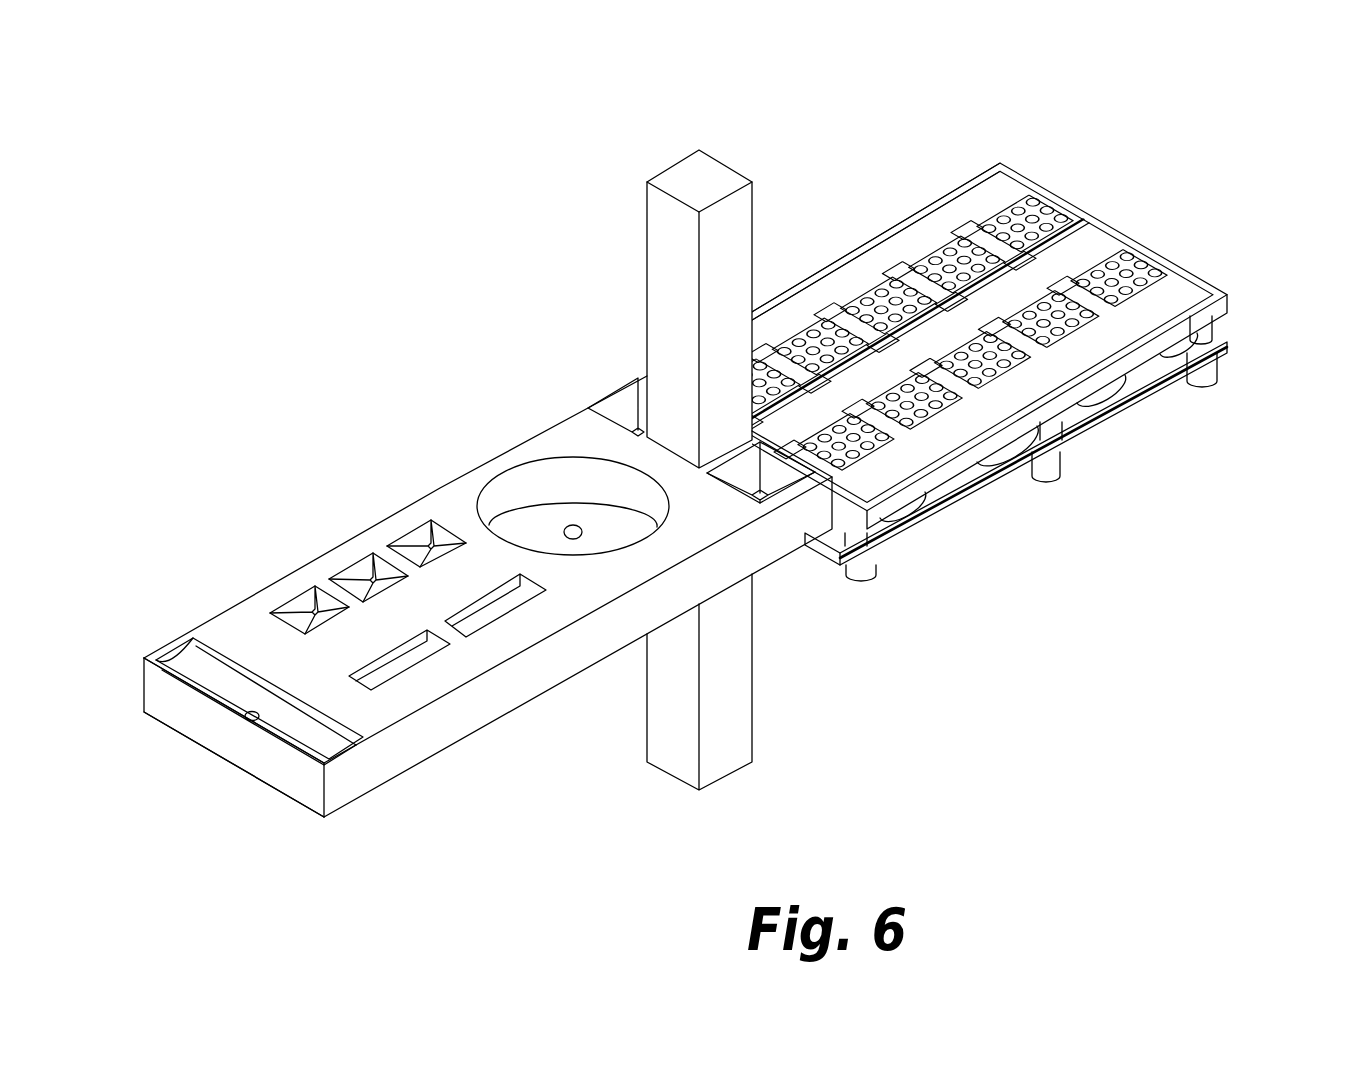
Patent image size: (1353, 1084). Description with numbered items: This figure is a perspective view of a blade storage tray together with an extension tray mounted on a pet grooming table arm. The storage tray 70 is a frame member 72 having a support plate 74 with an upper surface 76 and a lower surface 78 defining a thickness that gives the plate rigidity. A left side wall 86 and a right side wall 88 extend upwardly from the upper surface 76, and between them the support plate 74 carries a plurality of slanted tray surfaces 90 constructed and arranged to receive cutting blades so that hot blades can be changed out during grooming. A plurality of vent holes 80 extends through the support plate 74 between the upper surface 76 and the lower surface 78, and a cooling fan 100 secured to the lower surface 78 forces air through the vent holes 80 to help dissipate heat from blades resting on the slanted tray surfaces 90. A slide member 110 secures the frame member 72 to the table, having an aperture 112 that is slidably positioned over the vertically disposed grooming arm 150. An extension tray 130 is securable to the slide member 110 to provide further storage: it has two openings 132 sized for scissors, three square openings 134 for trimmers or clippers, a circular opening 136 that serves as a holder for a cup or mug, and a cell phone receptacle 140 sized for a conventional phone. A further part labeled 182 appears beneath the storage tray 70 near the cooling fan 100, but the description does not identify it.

The storage tray 70 is at (955, 123).
The frame member 72 is at (1222, 290).
The support plate 74 is at (858, 447).
The upper surface 76 is at (1123, 260).
The lower surface 78 is at (812, 547).
The vent holes 80 is at (1085, 232).
The left side wall 86 is at (903, 216).
The right side wall 88 is at (953, 443).
The slanted tray surfaces 90 is at (962, 215).
The cooling fan 100 is at (1138, 367).
The slide member 110 is at (608, 388).
The aperture 112 is at (605, 407).
The extension tray 130 is at (265, 571).
The openings for scissors 132 is at (385, 672).
The openings for trimmers 134 is at (413, 539).
The circular opening 136 is at (600, 545).
The cell phone receptacle 140 is at (182, 660).
The grooming arm 150 is at (650, 180).
The roller elements 182 is at (903, 490).